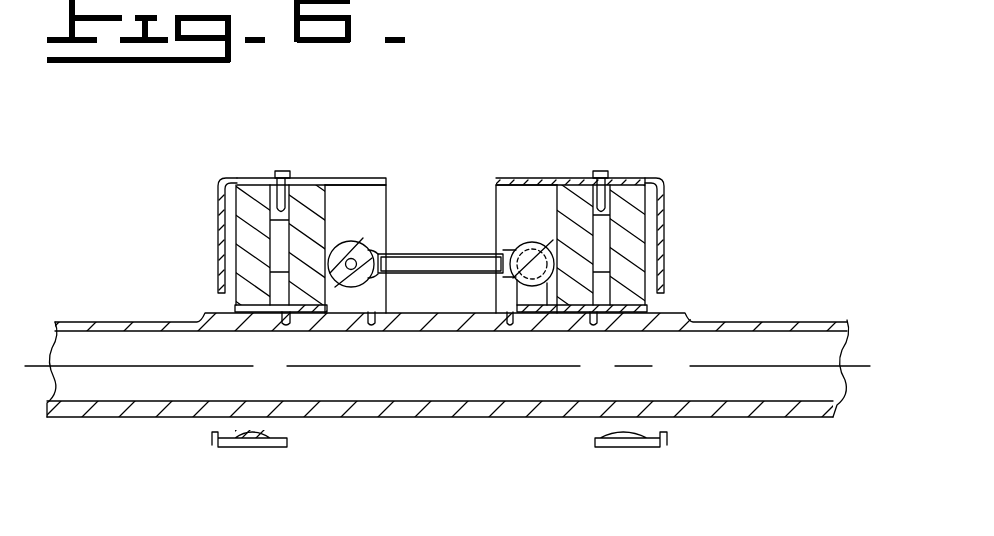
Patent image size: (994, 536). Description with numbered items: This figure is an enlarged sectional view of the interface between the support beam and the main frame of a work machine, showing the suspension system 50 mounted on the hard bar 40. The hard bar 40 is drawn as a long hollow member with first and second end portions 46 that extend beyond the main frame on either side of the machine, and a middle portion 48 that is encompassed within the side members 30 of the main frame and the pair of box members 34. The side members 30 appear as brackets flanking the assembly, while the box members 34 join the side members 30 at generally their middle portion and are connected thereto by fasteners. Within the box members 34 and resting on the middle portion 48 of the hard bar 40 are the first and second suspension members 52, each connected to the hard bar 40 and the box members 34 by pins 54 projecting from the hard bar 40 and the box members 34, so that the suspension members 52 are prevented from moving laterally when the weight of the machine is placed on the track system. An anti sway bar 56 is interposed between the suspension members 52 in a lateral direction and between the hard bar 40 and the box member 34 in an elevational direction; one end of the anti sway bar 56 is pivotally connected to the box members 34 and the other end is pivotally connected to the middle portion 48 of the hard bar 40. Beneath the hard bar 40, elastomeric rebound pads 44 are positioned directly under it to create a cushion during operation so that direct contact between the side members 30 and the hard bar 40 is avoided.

The side members 30 is at (218, 215).
The box member 34 is at (343, 180).
The hard bar 40 is at (447, 382).
The rebound pads 44 is at (280, 433).
The first and second end portions 46 is at (92, 322).
The middle portion 48 is at (143, 418).
The suspension system 50 is at (442, 279).
The first and second suspension members 52 is at (236, 305).
The pins 54 is at (278, 173).
The anti sway bar 56 is at (408, 254).